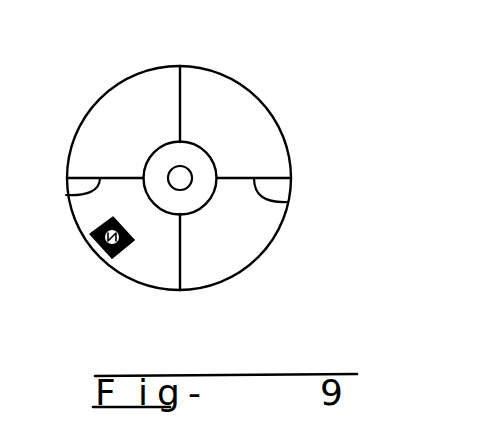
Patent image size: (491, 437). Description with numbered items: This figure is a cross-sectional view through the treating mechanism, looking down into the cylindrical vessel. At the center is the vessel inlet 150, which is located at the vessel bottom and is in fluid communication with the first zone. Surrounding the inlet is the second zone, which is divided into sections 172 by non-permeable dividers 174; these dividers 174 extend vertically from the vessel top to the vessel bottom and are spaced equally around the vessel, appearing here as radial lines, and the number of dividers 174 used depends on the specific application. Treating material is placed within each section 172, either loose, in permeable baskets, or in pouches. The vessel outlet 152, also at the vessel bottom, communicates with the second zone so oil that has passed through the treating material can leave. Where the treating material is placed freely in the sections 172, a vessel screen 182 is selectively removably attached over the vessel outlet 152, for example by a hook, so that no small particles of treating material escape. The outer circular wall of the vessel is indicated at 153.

The vessel inlet 150 is at (190, 167).
The vessel outlet 152 is at (112, 257).
The disk 153 is at (268, 247).
The sections 172 is at (195, 88).
The non-permeable dividers 174 is at (183, 108).
The vessel screen 182 is at (100, 228).